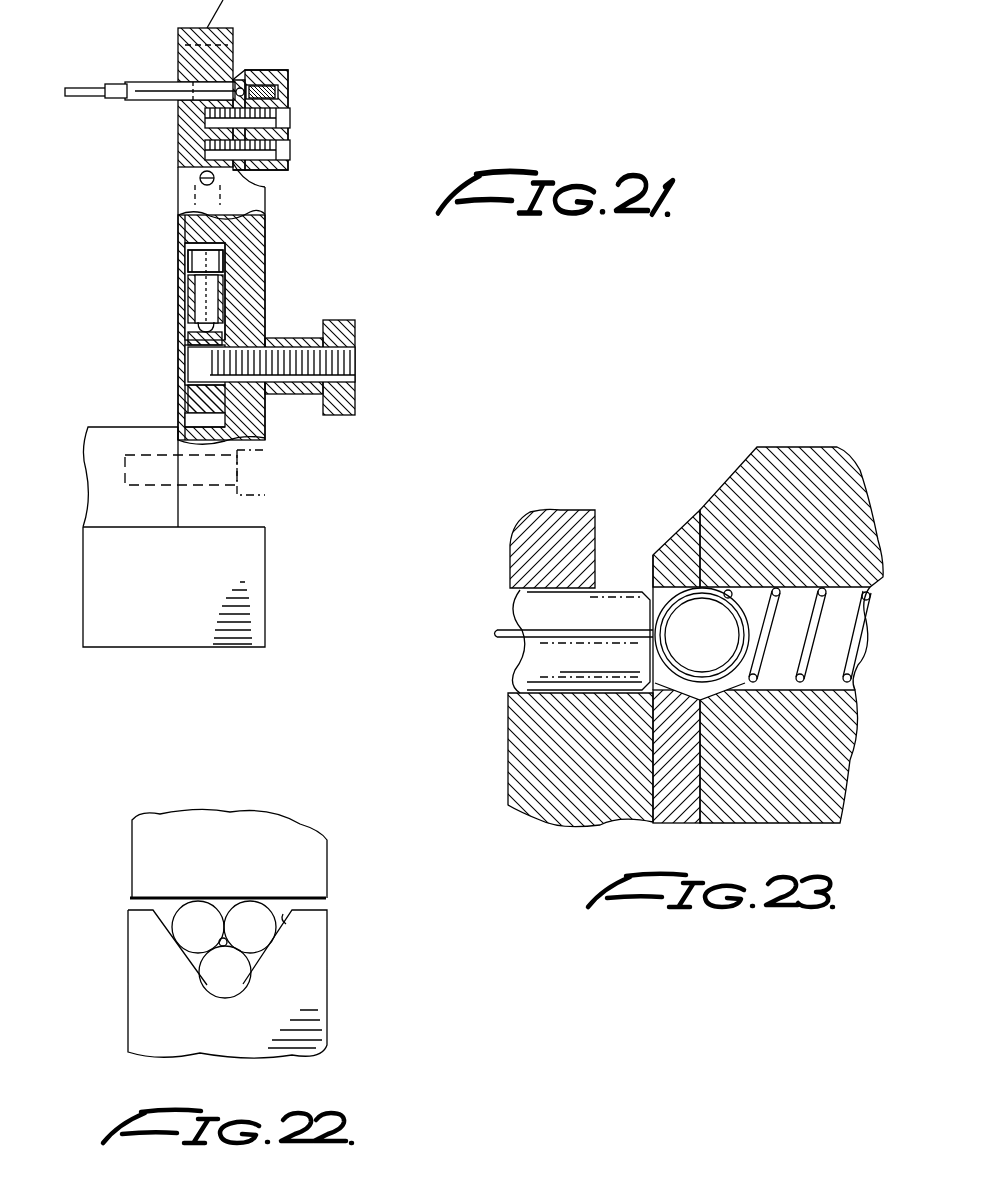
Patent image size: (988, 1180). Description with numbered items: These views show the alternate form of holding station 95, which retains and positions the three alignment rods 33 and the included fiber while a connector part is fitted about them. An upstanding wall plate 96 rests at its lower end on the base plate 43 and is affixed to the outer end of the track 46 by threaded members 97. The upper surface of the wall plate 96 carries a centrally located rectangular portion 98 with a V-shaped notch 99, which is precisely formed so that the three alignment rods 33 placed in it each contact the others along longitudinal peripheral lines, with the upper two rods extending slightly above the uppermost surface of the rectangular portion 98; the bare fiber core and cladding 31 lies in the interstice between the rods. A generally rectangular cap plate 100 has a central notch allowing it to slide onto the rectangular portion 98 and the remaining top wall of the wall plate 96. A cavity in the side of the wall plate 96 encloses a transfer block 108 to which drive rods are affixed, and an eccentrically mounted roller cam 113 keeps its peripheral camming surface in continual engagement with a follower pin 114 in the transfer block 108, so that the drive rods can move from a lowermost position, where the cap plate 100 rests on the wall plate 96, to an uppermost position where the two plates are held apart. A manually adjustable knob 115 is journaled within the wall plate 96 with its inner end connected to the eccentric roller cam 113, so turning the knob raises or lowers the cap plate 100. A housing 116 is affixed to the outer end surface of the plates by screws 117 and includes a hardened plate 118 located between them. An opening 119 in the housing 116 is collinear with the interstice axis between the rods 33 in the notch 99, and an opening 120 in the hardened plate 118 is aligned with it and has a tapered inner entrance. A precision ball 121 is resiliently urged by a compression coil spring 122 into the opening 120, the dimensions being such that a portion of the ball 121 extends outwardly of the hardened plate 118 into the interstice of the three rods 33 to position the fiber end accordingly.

In FIG. 21, the alignment rods 33 is at (140, 74).
In FIG. 22, the alignment rods 33 is at (247, 921).
In FIG. 23, the alignment rods 33 is at (613, 590).
In FIG. 21, the hardened plate 118 is at (238, 77).
In FIG. 23, the hardened plate 118 is at (686, 532).
In FIG. 21, the housing 116 is at (270, 76).
In FIG. 23, the housing 116 is at (808, 450).
In FIG. 21, the compression coil spring 122 is at (282, 92).
In FIG. 23, the compression coil spring 122 is at (838, 636).
In FIG. 21, the screws 117 is at (291, 150).
In FIG. 21, the holding station 95 is at (300, 166).
In FIG. 21, the rectangular portion 98 is at (180, 148).
In FIG. 22, the rectangular portion 98 is at (318, 979).
In FIG. 21, the wall plate 96 is at (266, 258).
In FIG. 21, the transfer block 108 is at (192, 290).
In FIG. 21, the follower pin 114 is at (196, 320).
In FIG. 21, the manually adjustable knob 115 is at (357, 336).
In FIG. 21, the eccentrically mounted roller cam 113 is at (196, 402).
In FIG. 21, the tracks 46 is at (84, 502).
In FIG. 21, the threaded members 97 is at (268, 505).
In FIG. 21, the base plate 43 is at (258, 576).
In FIG. 22, the cap plate 100 is at (296, 836).
In FIG. 22, the V-shaped notch 99 is at (288, 924).
In FIG. 22, the core and cladding 31 is at (184, 937).
In FIG. 23, the core and cladding 31 is at (496, 641).
In FIG. 23, the opening 120 is at (662, 601).
In FIG. 23, the precision ball 121 is at (680, 652).
In FIG. 23, the opening 119 is at (864, 600).